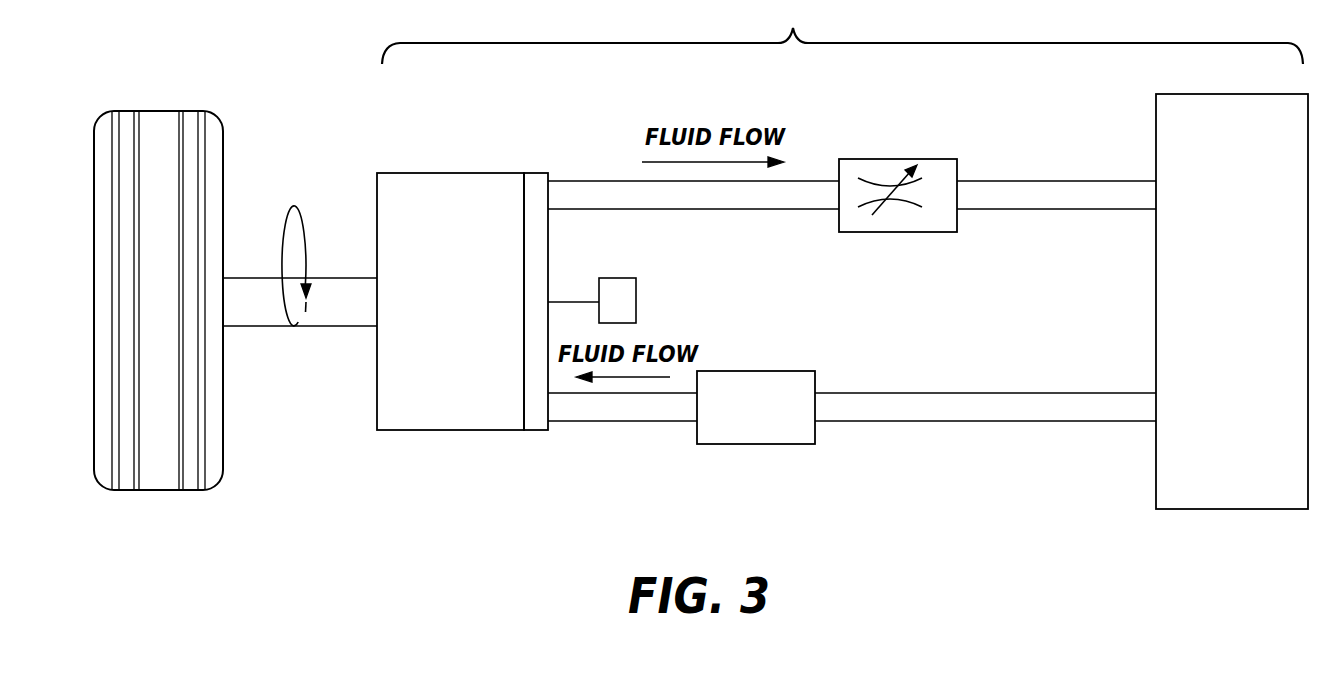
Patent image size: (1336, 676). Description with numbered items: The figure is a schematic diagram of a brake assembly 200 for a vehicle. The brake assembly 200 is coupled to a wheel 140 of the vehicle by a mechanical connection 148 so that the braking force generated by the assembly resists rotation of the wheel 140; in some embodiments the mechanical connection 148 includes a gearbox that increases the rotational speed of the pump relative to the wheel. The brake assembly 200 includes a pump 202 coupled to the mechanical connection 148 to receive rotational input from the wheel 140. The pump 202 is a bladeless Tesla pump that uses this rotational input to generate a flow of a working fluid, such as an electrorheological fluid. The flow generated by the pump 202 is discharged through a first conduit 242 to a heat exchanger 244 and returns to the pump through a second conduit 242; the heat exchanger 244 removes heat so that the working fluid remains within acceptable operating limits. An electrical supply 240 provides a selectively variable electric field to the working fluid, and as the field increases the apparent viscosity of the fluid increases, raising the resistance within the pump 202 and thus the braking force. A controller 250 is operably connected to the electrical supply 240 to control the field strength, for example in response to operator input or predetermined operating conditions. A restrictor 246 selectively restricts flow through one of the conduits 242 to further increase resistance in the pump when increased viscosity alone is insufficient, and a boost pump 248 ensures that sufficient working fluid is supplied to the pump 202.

The brake assembly 200 is at (842, 32).
The wheel 140 is at (156, 110).
The mechanical connection 148 is at (256, 328).
The pump 202 is at (451, 172).
The electrical supply 240 is at (536, 433).
The controller 250 is at (636, 296).
The conduit 242 is at (1040, 180).
The restrictor 246 is at (895, 158).
The boost pump 248 is at (750, 447).
The heat exchanger 244 is at (1232, 511).